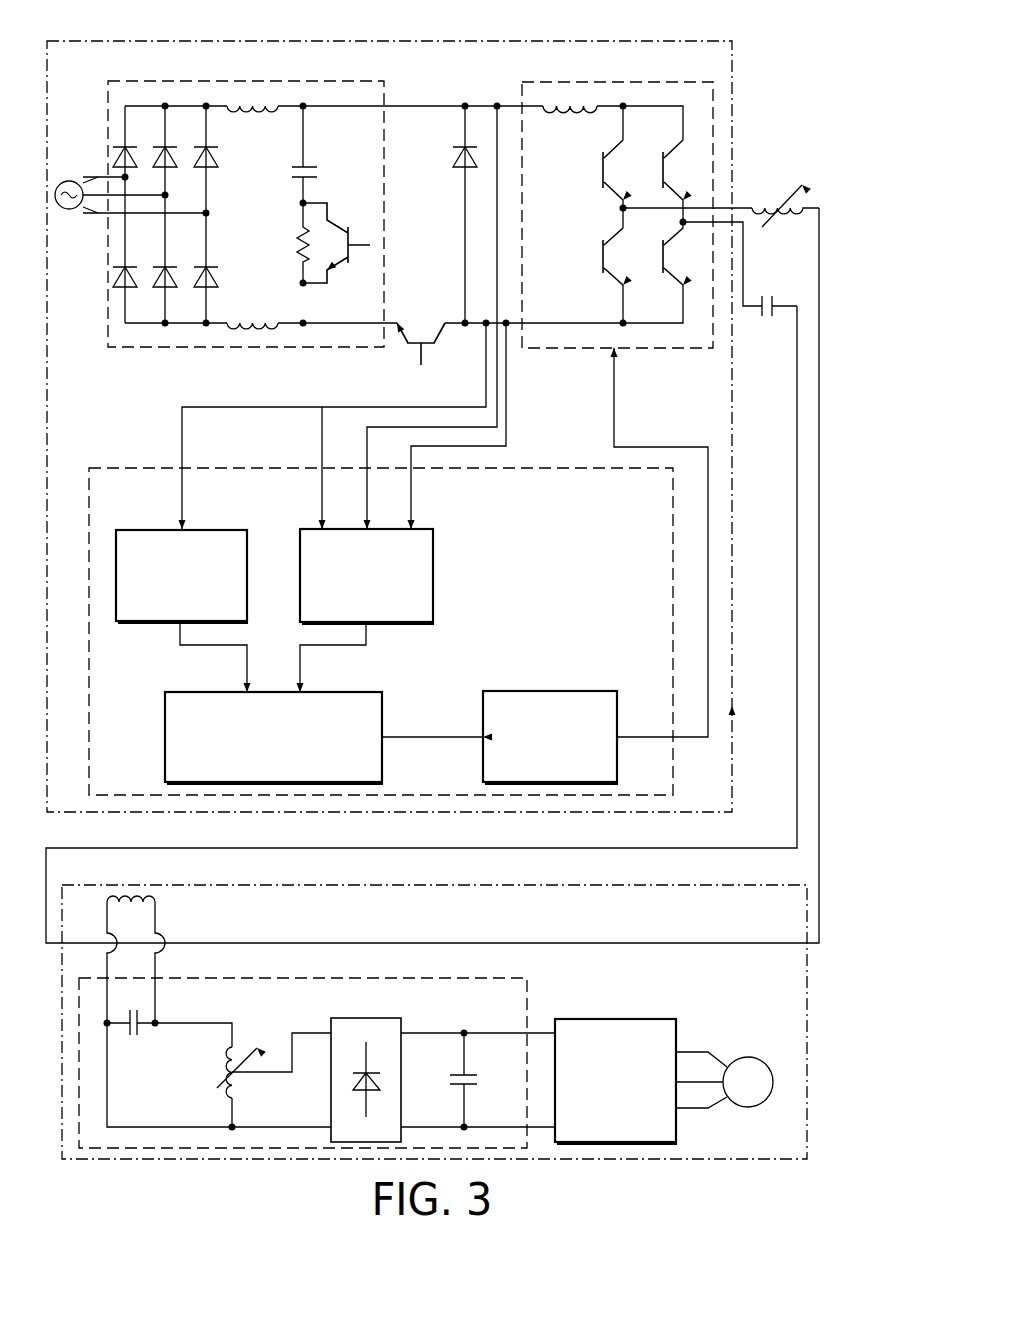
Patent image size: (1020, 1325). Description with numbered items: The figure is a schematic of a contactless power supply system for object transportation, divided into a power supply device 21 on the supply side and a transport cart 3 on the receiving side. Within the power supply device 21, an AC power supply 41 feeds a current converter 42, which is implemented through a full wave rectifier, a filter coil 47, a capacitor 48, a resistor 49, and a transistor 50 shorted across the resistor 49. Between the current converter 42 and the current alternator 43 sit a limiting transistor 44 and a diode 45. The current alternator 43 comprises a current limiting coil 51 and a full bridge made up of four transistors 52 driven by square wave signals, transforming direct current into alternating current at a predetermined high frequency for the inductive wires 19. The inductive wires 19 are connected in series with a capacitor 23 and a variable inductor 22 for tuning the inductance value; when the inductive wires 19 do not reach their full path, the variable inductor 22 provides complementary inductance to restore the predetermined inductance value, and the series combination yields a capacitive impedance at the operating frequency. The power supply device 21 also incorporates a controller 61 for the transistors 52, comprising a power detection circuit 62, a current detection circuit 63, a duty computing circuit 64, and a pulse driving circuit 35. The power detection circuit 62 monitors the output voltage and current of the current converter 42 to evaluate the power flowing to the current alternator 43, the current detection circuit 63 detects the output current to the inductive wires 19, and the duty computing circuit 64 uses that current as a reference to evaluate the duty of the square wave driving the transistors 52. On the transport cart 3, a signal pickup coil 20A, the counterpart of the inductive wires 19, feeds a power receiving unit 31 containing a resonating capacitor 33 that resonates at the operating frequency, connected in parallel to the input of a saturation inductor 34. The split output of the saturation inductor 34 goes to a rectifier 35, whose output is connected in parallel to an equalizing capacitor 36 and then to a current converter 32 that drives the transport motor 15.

The power supply device 21 is at (62, 40).
The current converter 42 is at (123, 81).
The current alternator 43 is at (540, 81).
The AC power source 41 is at (69, 181).
The filter coil 47 is at (253, 110).
The capacitor 48 is at (313, 170).
The resistor 49 is at (295, 240).
The transistor 50 is at (342, 217).
The diode 45 is at (452, 157).
The limiting transistor 44 is at (420, 330).
The current limiting coil 51 is at (572, 110).
The transistors 52 is at (622, 262).
The variable inductor 22 is at (780, 200).
The capacitor 23 is at (767, 320).
The controller 61 is at (89, 469).
The current detection circuit 63 is at (227, 530).
The power detection circuit 62 is at (417, 529).
The duty computing circuit 64 is at (340, 692).
The rectifier 35 is at (495, 691).
The inductive wires 19 is at (338, 849).
The transport cart 3 is at (322, 885).
The signal pickup coil 20A is at (155, 902).
The power receiving unit 31 is at (332, 978).
The resonating capacitor 33 is at (132, 1040).
The saturation inductor 34 is at (240, 1073).
The equalizing capacitor 36 is at (450, 1078).
The current converter 32 is at (565, 1019).
The transport motor 15 is at (752, 1058).